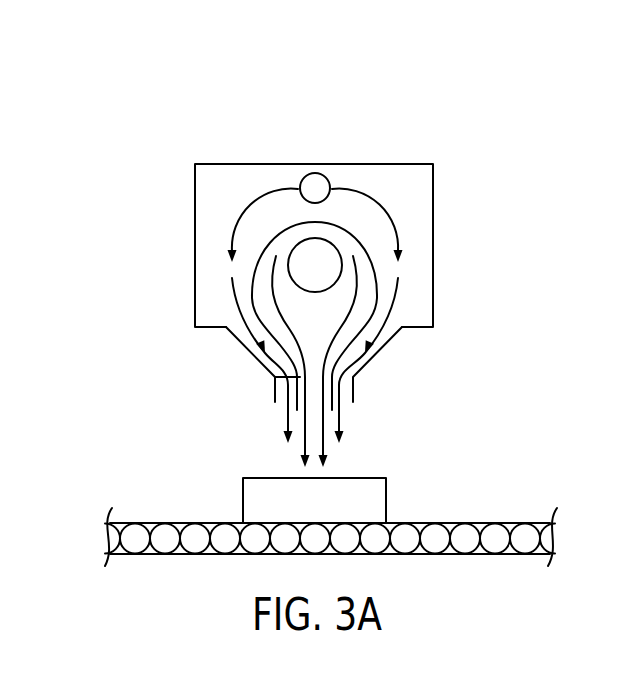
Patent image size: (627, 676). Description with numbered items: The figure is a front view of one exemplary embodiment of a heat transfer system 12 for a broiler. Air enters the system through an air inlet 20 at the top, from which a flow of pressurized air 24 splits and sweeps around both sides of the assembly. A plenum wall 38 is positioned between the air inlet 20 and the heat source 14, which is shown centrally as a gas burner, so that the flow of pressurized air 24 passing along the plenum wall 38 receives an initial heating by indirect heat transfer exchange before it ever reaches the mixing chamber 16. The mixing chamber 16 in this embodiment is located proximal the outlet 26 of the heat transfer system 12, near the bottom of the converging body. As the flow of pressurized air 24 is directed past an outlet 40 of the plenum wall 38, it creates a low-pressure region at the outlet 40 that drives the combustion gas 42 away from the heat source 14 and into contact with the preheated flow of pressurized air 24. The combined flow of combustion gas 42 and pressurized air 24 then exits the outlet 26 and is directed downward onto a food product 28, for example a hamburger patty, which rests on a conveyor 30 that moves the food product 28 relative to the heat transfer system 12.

The heat transfer system 12 is at (405, 126).
The heat source 14 is at (323, 253).
The mixing chamber 16 is at (270, 390).
The air inlet 20 is at (306, 174).
The flow of pressurized air 24 is at (377, 205).
The outlet 26 is at (354, 393).
The food product 28 is at (327, 514).
The conveyor 30 is at (215, 523).
The plenum wall 38 is at (268, 248).
The outlet of the plenum wall 40 is at (271, 377).
The combustion gas 42 is at (328, 315).